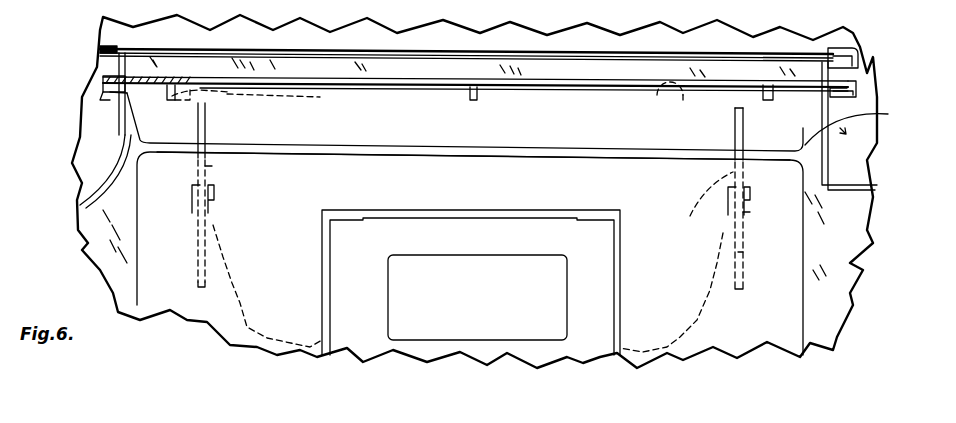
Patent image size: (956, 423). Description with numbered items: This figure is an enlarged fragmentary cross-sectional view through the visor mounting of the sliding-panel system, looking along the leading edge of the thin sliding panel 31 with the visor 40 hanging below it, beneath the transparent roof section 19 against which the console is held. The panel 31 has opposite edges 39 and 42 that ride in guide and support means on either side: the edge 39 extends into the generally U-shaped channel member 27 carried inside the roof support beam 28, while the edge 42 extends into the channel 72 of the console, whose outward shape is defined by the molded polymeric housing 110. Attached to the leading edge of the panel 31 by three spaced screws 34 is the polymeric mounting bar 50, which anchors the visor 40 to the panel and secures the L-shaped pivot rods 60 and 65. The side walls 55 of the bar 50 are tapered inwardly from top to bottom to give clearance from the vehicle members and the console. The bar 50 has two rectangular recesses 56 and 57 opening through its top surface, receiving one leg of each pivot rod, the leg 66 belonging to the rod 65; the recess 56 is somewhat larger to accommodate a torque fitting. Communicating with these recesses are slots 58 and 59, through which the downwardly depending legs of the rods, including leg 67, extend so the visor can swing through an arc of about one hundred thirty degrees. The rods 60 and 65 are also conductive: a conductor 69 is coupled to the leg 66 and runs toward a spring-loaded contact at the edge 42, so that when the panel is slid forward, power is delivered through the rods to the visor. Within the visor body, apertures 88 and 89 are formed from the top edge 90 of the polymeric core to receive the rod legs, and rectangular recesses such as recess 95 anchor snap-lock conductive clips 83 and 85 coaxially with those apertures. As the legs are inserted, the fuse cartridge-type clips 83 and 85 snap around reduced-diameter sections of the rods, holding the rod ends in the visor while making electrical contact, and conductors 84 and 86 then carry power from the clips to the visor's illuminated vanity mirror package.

The roof section 19 is at (284, 49).
The U-shaped channel member 27 is at (110, 100).
The roof support beam 28 is at (87, 200).
The panel 31 is at (326, 82).
The screws 34 is at (170, 96).
The edge of panel 39 is at (100, 47).
The visor 40 is at (806, 300).
The edge of panel 42 is at (851, 72).
The mounting bar 50 is at (510, 110).
The side walls 55 is at (496, 157).
The rectangular recess 56 is at (300, 98).
The rectangular recess 57 is at (652, 88).
The slot 58 is at (206, 118).
The slot 59 is at (735, 126).
The L-shaped pivot rod 60 is at (212, 166).
The L-shaped pivot rod 65 is at (697, 207).
The leg of pivot rod 66 is at (679, 100).
The leg of pivot rod 67 is at (742, 252).
The conductor 69 is at (805, 124).
The channel 72 is at (853, 85).
The locking electrical clip 83 is at (214, 201).
The conductor 84 is at (242, 302).
The locking electrical clip 85 is at (750, 212).
The conductor 86 is at (680, 336).
The aperture 88 is at (147, 45).
The aperture 89 is at (743, 289).
The top edge 90 is at (335, 151).
The rectangular recess 95 is at (749, 196).
The housing 110 is at (866, 196).